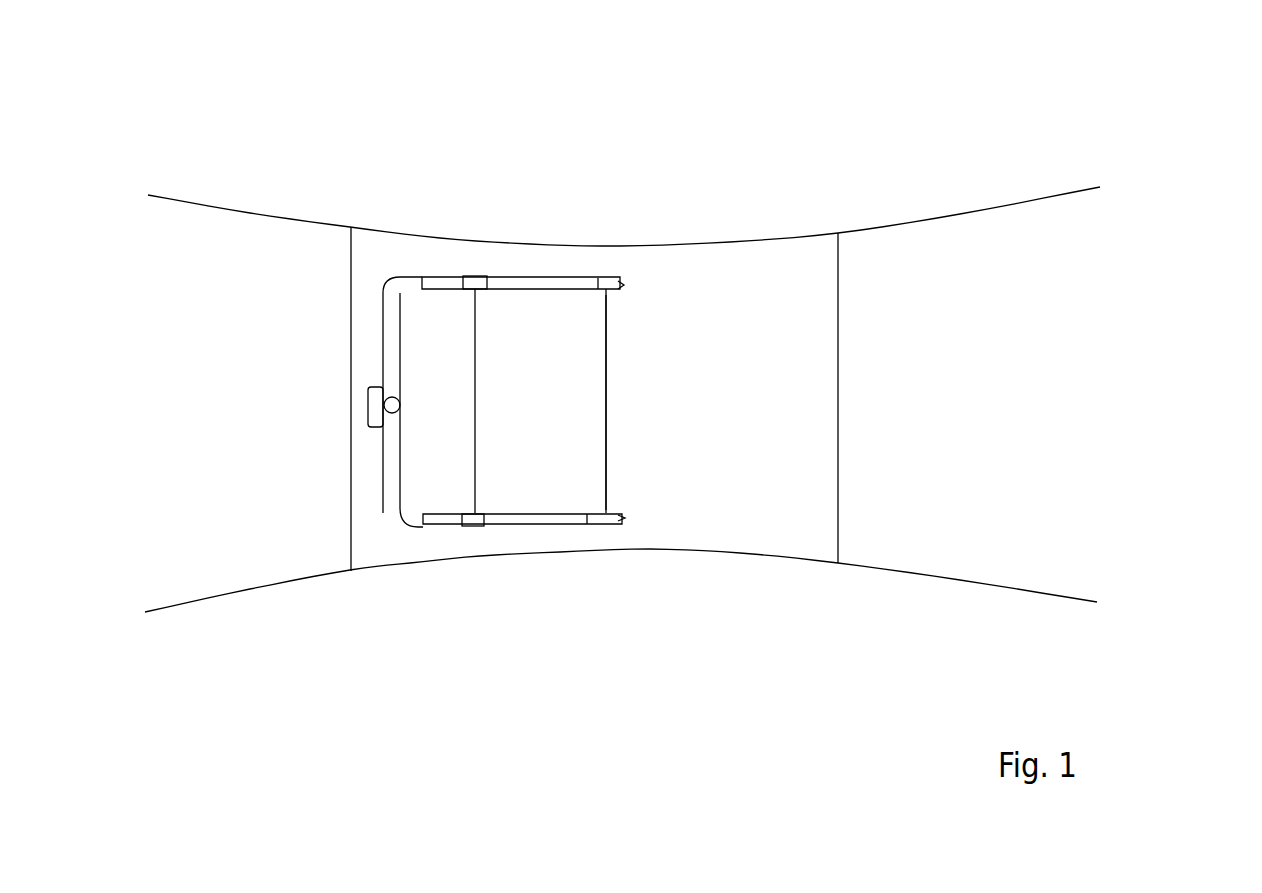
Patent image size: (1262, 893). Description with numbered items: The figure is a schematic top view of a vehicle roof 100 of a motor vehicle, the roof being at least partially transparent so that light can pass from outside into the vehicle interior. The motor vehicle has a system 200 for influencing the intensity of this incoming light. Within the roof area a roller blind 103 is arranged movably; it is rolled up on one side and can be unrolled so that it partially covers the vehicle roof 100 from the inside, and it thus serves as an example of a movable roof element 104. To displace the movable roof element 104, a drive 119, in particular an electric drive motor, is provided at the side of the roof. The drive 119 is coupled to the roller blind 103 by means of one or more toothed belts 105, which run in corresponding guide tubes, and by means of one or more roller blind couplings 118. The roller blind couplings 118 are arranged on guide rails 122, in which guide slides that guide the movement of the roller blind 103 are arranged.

The vehicle roof 100 is at (800, 170).
The system 200 is at (1117, 82).
The roller blind 103 is at (548, 412).
The movable roof element 104 is at (587, 368).
The toothed belt 105 is at (412, 275).
The roller blind coupling 118 is at (475, 277).
The drive 119 is at (397, 403).
The guide rail 122 is at (598, 278).